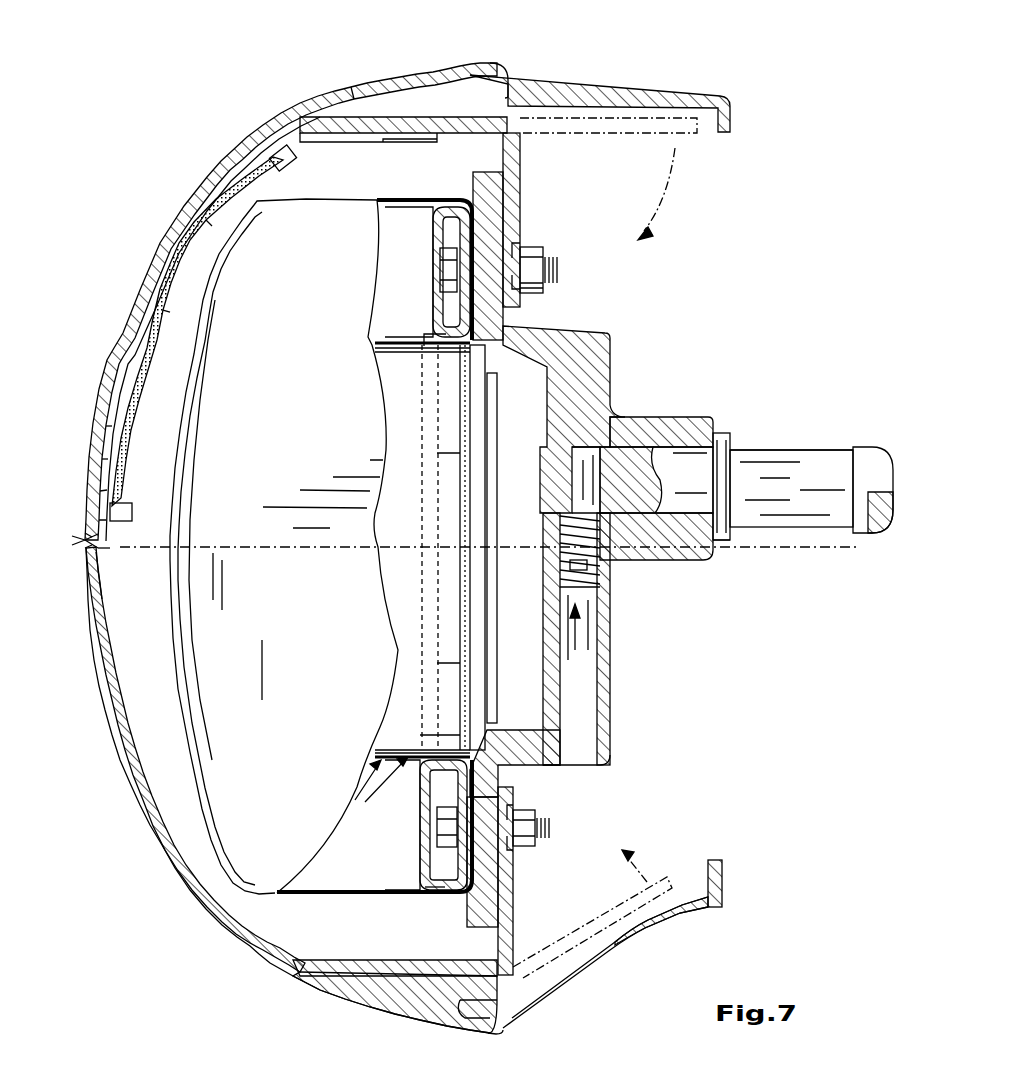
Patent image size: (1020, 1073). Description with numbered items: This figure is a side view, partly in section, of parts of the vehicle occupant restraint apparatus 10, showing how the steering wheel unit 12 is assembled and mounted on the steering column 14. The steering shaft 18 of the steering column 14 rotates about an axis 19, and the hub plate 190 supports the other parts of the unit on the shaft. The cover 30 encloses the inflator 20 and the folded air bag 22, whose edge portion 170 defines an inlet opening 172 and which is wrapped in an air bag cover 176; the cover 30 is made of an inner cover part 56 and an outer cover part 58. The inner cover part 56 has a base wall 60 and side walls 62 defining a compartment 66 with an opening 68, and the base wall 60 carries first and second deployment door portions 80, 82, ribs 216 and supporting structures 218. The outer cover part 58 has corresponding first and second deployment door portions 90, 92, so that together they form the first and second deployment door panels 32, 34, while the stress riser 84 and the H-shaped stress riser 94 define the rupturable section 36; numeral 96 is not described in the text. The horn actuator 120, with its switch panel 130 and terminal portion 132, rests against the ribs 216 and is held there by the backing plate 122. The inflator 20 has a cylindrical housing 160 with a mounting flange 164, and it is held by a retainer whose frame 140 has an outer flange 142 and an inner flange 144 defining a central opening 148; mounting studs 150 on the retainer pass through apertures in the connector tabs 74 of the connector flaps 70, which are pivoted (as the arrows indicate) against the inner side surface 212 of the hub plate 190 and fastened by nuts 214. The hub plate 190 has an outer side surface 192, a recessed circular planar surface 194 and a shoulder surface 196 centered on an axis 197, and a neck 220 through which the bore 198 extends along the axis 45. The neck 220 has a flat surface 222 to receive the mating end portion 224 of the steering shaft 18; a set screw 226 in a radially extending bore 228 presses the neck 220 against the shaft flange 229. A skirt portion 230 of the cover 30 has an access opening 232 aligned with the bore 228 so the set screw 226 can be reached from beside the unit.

The vehicle occupant restraint apparatus 10 is at (145, 70).
The vehicle steering wheel unit 12 is at (134, 115).
The vehicle steering column 14 is at (848, 444).
The steering shaft 18 is at (822, 466).
The axis 19 is at (892, 486).
The inflator 20 is at (356, 792).
The air bag 22 is at (425, 886).
The cover 30 is at (231, 147).
The first deployment door panel 32 is at (112, 331).
The second deployment door panel 34 is at (104, 714).
The rupturable section 36 is at (70, 540).
The axis 45 is at (540, 486).
The inner cover part 56 is at (284, 104).
The outer cover part 58 is at (344, 80).
The base wall 60 is at (178, 243).
The side walls 62 is at (396, 96).
The compartment 66 is at (490, 546).
The opening 68 is at (494, 134).
The connector flaps 70 is at (521, 182).
The connector tabs 74 is at (522, 242).
The first deployment door portion 80 is at (108, 350).
The second deployment door portion 82 is at (100, 622).
The stress riser 84 is at (106, 549).
The first deployment door portion 90 is at (112, 386).
The second deployment door portion 92 is at (96, 690).
The H-shaped stress riser 94 is at (88, 534).
The seam 96 is at (86, 549).
The horn actuator 120 is at (170, 257).
The backing plate 122 is at (202, 300).
The switch panel 130 is at (192, 347).
The terminal portion 132 is at (356, 144).
The frame 140 is at (432, 286).
The outer flange 142 is at (440, 236).
The inner flange 144 is at (376, 348).
The central opening 148 is at (428, 680).
The mounting studs 150 is at (560, 273).
The housing 160 is at (402, 719).
The mounting flange 164 is at (423, 337).
The edge portion 170 is at (420, 832).
The inlet opening 172 is at (420, 802).
The air bag cover 176 is at (302, 894).
The hub plate 190 is at (541, 337).
The outer side surface 192 is at (449, 198).
The planar surface 194 is at (545, 642).
The shoulder surface 196 is at (461, 393).
The axis 197 is at (838, 550).
The bore 198 is at (683, 480).
The inner side surface 212 is at (536, 246).
The nuts 214 is at (540, 806).
The ribs 216 is at (208, 240).
The supporting structures 218 is at (288, 172).
The neck 220 is at (692, 418).
The flat surface 222 is at (723, 542).
The end portion 224 is at (626, 456).
The set screw 226 is at (596, 566).
The radially extending bore 228 is at (590, 652).
The flange 229 is at (724, 434).
The skirt portion 230 is at (725, 882).
The access opening 232 is at (580, 976).